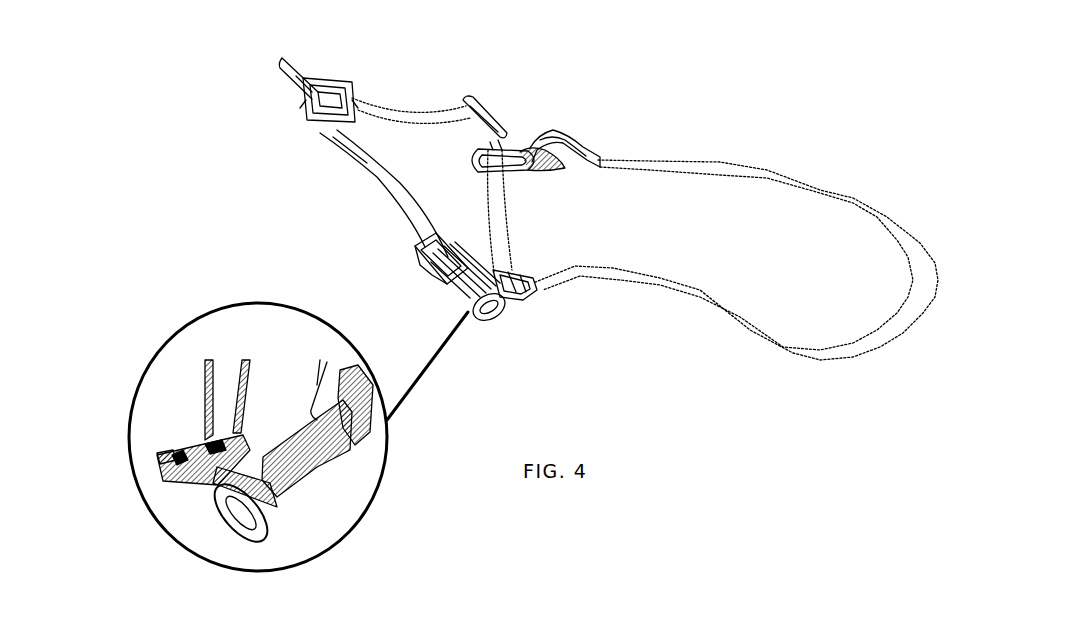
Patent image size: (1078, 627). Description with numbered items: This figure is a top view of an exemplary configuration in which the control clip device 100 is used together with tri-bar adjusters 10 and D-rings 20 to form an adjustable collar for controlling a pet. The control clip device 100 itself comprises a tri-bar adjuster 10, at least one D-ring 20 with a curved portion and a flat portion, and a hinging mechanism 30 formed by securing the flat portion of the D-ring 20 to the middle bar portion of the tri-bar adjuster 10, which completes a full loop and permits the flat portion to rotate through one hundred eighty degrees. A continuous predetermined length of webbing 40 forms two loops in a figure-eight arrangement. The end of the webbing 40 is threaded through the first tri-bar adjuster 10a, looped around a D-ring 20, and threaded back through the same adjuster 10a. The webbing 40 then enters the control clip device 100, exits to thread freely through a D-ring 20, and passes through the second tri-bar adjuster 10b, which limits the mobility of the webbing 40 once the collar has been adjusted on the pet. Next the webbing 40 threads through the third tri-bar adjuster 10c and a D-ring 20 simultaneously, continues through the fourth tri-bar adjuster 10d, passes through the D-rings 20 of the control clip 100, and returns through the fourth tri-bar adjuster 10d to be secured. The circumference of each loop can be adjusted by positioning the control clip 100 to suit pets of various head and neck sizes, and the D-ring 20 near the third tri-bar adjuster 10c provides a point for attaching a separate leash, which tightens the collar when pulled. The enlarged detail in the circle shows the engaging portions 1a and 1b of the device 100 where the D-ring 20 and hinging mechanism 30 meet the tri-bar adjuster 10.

The first engaging portion 1a is at (178, 458).
The second engaging portion 1b is at (216, 445).
The tri-bar adjuster 10 is at (163, 487).
The tri-bar adjuster 10a is at (560, 138).
The second tri-bar adjuster 10b is at (488, 110).
The third tri-bar adjuster 10c is at (350, 100).
The fourth tri-bar adjuster 10d is at (418, 250).
The D-ring 20 is at (290, 62).
The hinging mechanism 30 is at (202, 492).
The webbing 40 is at (698, 160).
The control clip device 100 is at (523, 297).